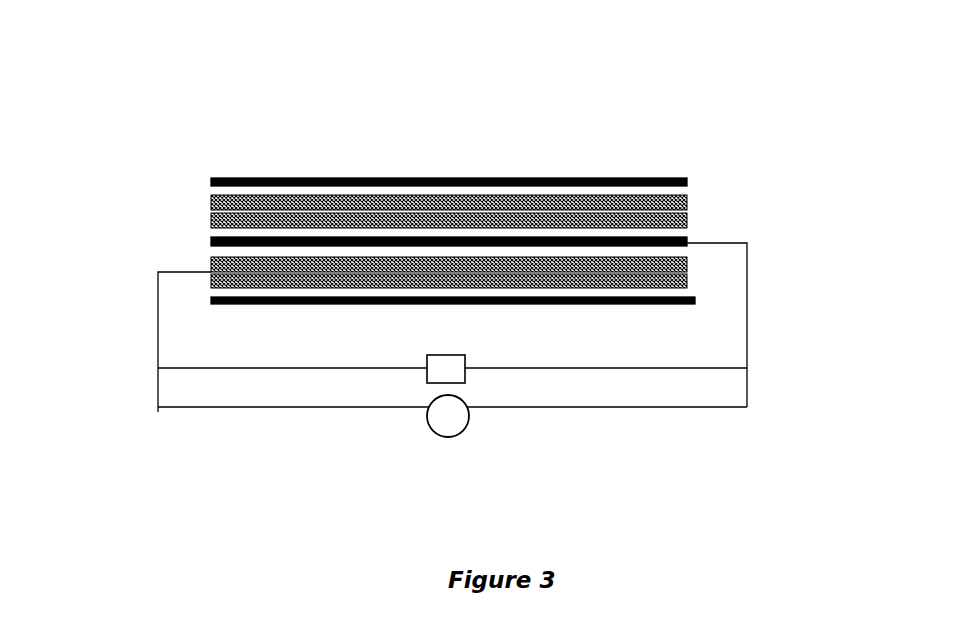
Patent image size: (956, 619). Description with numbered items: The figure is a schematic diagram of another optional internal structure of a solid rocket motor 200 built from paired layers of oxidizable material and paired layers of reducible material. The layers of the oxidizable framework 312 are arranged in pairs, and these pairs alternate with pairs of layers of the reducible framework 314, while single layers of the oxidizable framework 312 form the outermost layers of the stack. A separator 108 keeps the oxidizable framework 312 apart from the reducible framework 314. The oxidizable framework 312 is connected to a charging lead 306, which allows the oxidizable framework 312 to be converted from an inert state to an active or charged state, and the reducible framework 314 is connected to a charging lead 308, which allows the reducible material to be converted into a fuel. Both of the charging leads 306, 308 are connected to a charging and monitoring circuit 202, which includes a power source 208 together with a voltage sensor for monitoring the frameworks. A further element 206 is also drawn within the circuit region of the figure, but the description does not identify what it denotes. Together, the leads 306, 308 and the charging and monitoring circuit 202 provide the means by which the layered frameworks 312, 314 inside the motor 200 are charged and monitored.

The motor 200 is at (605, 112).
The separator 108 is at (210, 193).
The charging and monitoring circuit 202 is at (261, 474).
The voltage source 206 is at (427, 368).
The power source 208 is at (464, 423).
The charging lead 306 is at (747, 255).
The charging lead 308 is at (158, 306).
The oxidizable framework 312 is at (690, 231).
The reducible framework 314 is at (208, 264).